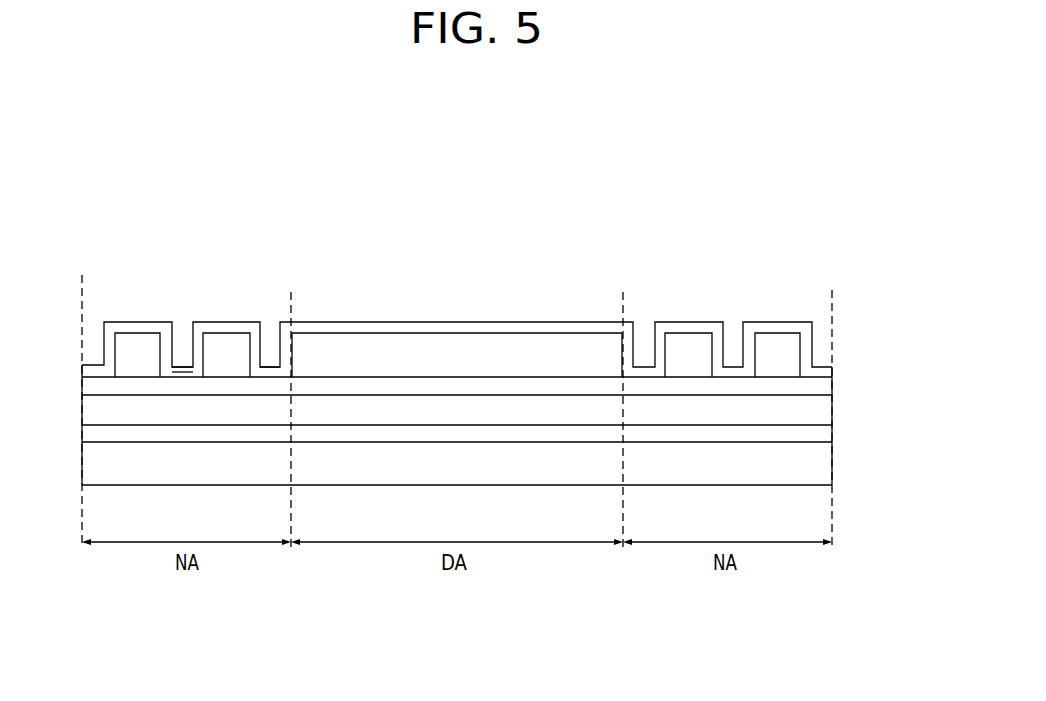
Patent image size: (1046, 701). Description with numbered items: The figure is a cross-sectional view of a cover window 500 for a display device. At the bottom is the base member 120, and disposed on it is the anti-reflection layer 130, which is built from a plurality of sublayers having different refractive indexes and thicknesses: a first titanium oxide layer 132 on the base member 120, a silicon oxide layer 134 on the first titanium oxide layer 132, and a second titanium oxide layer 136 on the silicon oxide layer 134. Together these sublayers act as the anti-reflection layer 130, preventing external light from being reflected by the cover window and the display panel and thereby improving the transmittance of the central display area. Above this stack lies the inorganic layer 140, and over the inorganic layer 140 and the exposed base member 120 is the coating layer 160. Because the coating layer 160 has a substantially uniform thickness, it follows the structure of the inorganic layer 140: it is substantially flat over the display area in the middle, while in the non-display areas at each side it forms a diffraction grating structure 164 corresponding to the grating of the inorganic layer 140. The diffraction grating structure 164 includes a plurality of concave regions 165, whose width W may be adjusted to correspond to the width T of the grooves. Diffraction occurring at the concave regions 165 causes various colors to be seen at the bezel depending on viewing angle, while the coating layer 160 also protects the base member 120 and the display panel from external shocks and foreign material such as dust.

The cover window 500 is at (477, 156).
The base member 120 is at (823, 467).
The anti-reflection layer 130 is at (518, 410).
The first titanium oxide layer 132 is at (823, 437).
The silicon oxide layer 134 is at (823, 412).
The second titanium oxide layer 136 is at (823, 387).
The inorganic layer 140 is at (523, 345).
The coating layer 160 is at (428, 333).
The diffraction grating structure 164 is at (832, 273).
The concave regions 165 is at (268, 336).
The width of the concave regions W is at (215, 328).
The width of the grooves T is at (192, 373).